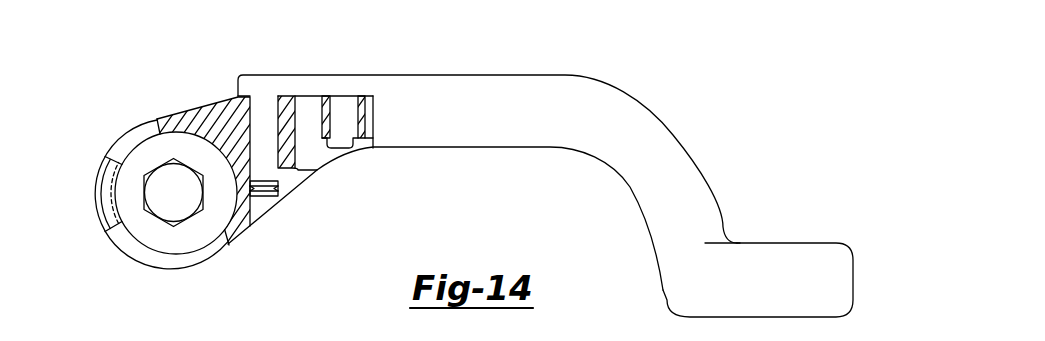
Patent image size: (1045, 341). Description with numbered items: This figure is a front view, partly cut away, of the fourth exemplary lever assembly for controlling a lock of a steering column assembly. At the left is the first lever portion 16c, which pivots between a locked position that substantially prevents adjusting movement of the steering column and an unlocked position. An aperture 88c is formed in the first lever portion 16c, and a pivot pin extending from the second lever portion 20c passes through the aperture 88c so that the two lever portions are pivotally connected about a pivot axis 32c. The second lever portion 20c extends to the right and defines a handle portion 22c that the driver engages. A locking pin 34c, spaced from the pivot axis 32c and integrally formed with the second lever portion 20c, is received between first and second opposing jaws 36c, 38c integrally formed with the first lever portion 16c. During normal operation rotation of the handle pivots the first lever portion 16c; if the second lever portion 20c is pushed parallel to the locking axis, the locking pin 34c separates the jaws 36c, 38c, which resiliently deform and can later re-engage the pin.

The first lever portion 16c is at (197, 99).
The second lever portion 20c is at (626, 84).
The handle portion 22c is at (800, 280).
The pivot axis 32c is at (270, 170).
The locking pin 34c is at (343, 127).
The first opposing jaw 36c is at (322, 108).
The second opposing jaw 38c is at (365, 113).
The aperture 88c is at (248, 120).